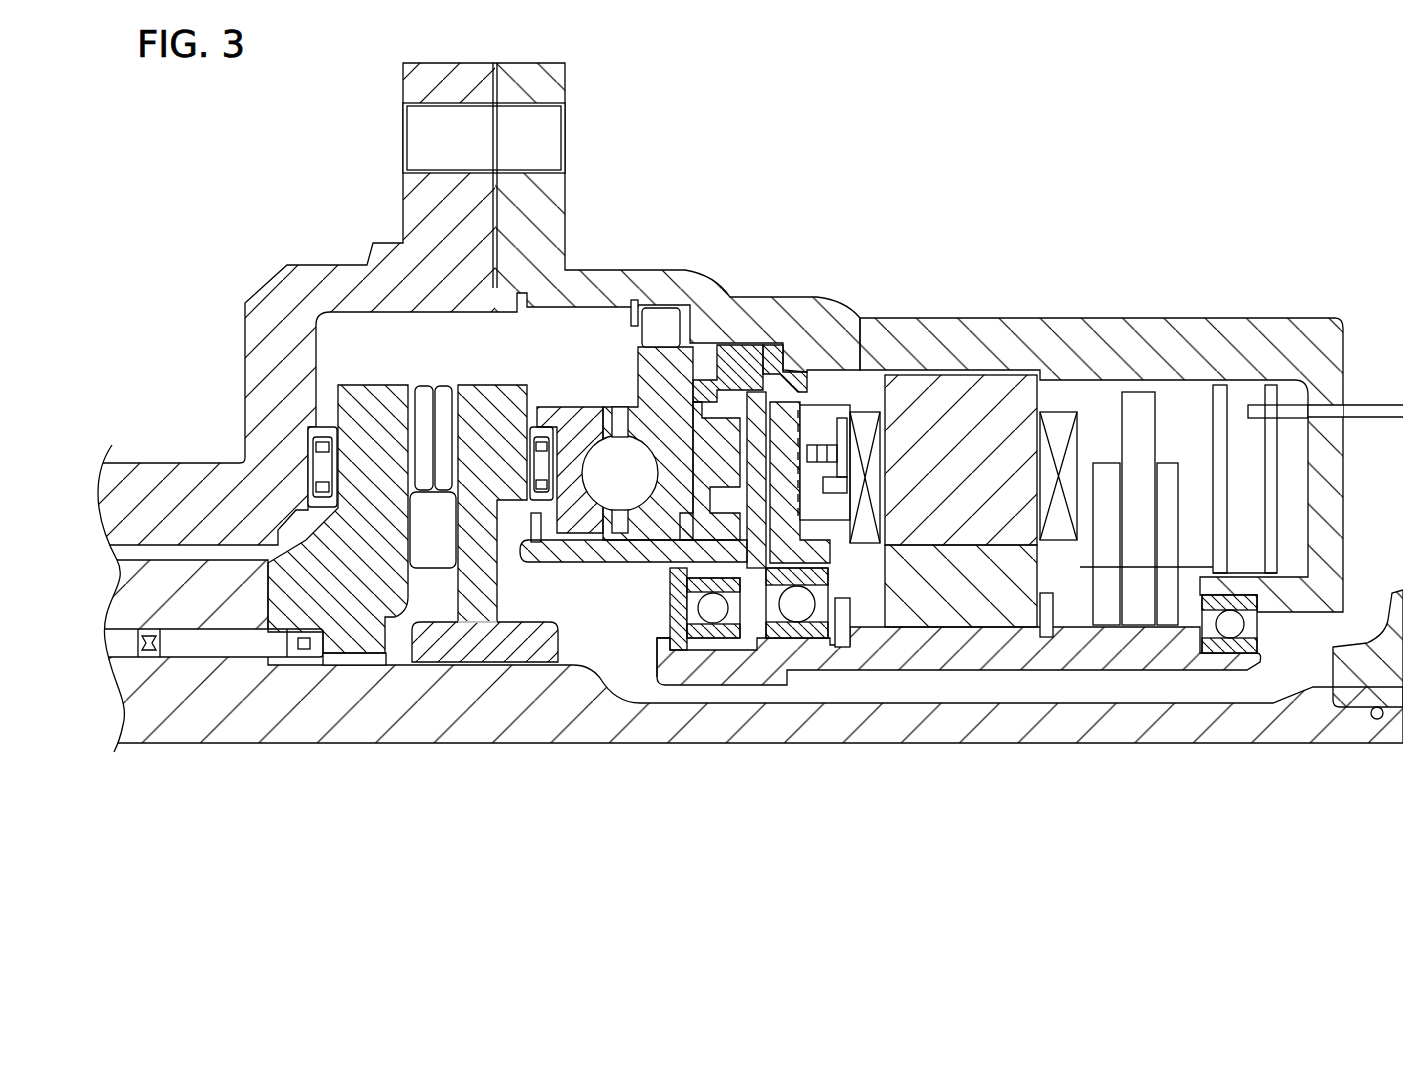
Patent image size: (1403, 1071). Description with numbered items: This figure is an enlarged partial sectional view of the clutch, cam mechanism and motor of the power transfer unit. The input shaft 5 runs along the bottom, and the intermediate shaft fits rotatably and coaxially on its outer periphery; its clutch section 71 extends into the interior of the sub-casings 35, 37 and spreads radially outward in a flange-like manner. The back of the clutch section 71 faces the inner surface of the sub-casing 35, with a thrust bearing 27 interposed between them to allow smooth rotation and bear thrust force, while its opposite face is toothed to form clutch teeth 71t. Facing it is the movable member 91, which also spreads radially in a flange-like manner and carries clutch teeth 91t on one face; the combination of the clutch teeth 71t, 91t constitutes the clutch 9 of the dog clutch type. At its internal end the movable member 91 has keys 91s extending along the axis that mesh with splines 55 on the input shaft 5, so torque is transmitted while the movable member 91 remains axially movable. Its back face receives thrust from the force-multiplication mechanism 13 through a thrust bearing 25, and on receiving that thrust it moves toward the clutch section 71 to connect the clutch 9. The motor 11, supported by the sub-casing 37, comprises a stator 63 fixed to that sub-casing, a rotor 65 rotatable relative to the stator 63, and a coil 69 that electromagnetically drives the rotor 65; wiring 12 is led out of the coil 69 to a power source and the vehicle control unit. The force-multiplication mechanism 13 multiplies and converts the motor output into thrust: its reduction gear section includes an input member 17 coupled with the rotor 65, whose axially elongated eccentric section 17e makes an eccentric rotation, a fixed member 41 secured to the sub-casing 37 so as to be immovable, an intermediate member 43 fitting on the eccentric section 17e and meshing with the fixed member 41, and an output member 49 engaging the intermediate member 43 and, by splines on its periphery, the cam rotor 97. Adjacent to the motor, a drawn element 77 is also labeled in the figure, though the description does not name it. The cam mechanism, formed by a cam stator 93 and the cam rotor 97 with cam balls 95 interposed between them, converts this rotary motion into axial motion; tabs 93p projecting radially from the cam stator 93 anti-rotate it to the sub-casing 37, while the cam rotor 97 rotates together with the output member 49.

The input shaft 5 is at (223, 744).
The clutch 9 is at (445, 763).
The motor 11 is at (960, 765).
The wiring 12 is at (1378, 405).
The force-multiplication mechanism 13 is at (723, 763).
The input member 17 is at (1003, 671).
The eccentric section 17e is at (686, 688).
The thrust bearing 25 is at (540, 413).
The thrust bearing 27 is at (305, 448).
The sub-casing 35 is at (263, 277).
The sub-casing 37 is at (906, 317).
The fixed member 41 is at (740, 338).
The intermediate member 43 is at (670, 615).
The output member 49 is at (604, 566).
The splines 55 is at (388, 658).
The stator 63 is at (985, 374).
The rotor 65 is at (884, 605).
The coil 69 is at (1079, 430).
The clutch section 71 is at (377, 384).
The clutch teeth 71t is at (423, 387).
The stator 77 is at (808, 387).
The movable member 91 is at (488, 387).
The keys 91s is at (513, 668).
The clutch teeth 91t is at (452, 387).
The cam stator 93 is at (700, 357).
The tabs 93p is at (663, 322).
The cam balls 95 is at (620, 409).
The cam rotor 97 is at (568, 405).